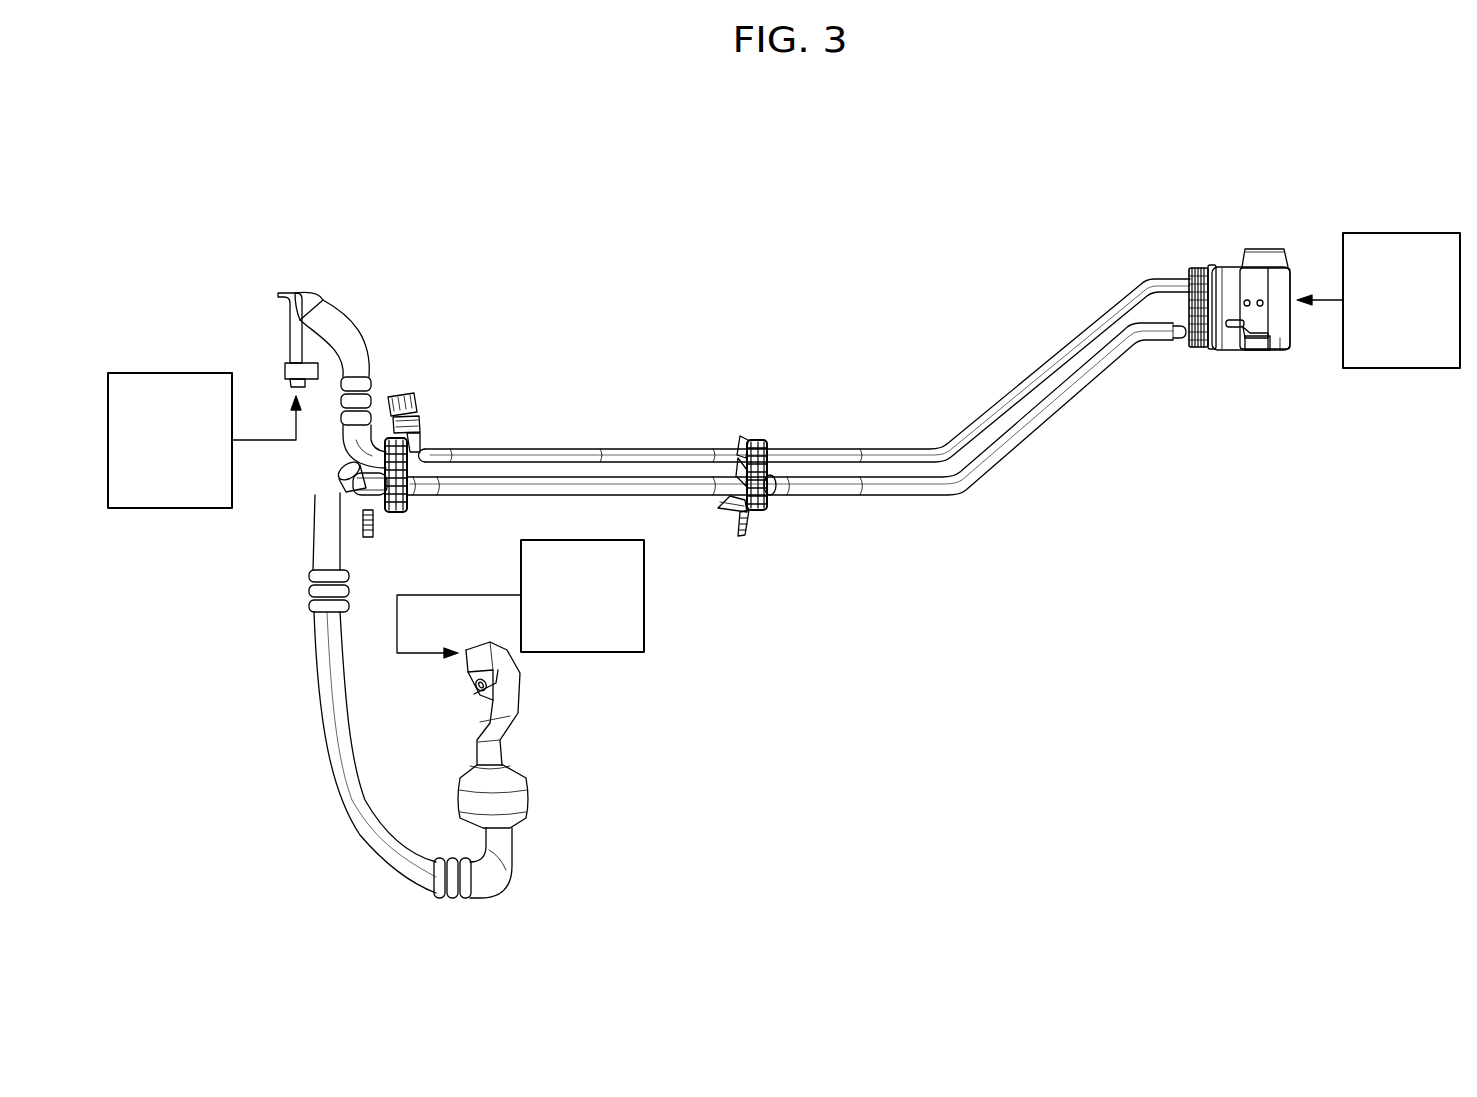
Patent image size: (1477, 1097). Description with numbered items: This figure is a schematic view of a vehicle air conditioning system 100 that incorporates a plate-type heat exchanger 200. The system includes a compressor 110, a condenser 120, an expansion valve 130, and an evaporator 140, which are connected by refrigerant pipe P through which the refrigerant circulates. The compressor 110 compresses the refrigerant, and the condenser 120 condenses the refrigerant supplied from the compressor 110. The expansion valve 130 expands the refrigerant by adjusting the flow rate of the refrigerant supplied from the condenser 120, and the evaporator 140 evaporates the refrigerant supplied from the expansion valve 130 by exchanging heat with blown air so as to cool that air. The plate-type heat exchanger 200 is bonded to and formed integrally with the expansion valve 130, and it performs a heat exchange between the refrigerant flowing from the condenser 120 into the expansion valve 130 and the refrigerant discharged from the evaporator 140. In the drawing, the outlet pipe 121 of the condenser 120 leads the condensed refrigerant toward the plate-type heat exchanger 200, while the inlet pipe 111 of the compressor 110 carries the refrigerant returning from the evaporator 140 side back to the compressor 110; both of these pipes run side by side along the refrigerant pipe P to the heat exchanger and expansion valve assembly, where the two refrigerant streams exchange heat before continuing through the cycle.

The vehicle air conditioning system 100 is at (720, 416).
The compressor 110 is at (646, 595).
The inlet pipe of the compressor 111 is at (1165, 336).
The condenser 120 is at (180, 373).
The outlet pipe of the condenser 121 is at (1175, 284).
The expansion valve 130 is at (1285, 340).
The evaporator 140 is at (1393, 233).
The plate-type heat exchanger 200 is at (1222, 250).
The refrigerant pipe P is at (705, 491).